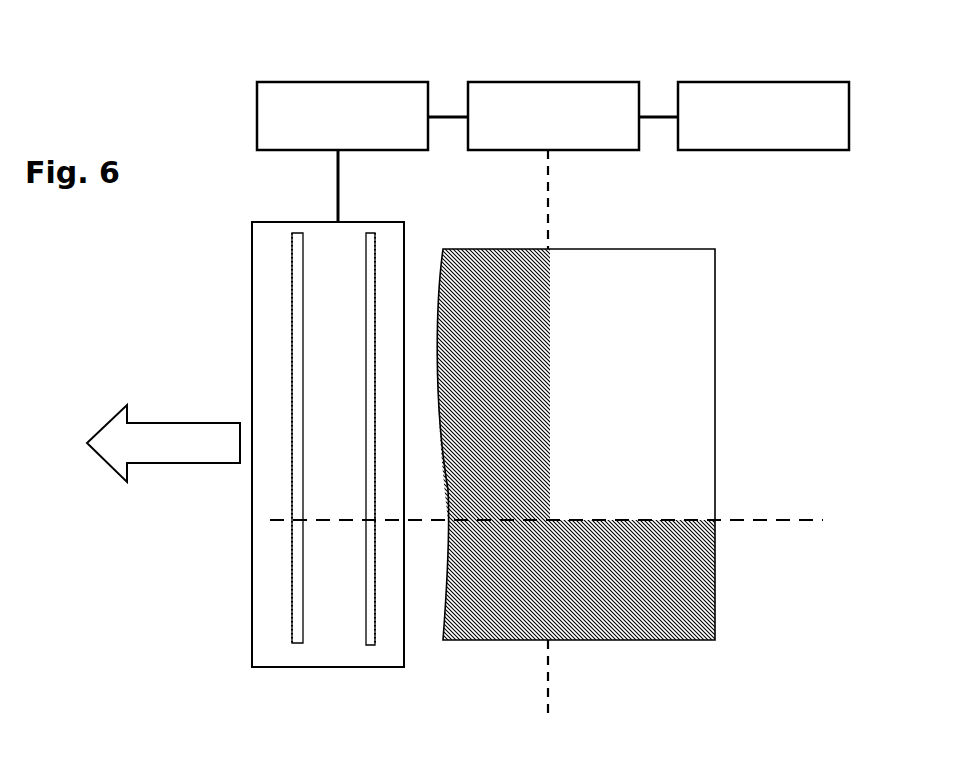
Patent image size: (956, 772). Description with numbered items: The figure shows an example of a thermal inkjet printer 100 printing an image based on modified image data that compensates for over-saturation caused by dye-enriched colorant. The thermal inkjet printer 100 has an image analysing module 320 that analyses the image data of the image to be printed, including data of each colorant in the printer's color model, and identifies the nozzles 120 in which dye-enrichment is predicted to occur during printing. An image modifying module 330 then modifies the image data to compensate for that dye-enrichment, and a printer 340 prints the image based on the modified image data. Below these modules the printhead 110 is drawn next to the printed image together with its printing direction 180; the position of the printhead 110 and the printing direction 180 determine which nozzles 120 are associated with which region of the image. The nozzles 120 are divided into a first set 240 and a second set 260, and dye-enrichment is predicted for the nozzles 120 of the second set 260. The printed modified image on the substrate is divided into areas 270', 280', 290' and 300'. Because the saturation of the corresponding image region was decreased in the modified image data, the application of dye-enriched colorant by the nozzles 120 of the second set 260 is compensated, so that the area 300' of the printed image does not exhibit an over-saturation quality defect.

The thermal inkjet printer 100 is at (168, 119).
The printhead 110 is at (272, 263).
The nozzles 120 is at (293, 313).
The printing direction 180 is at (168, 423).
The first set of nozzles 240 is at (366, 585).
The second set of nozzles 260 is at (366, 378).
The area of the image on the substrate 270' is at (629, 580).
The area of the image on the substrate 280' is at (626, 444).
The area of the image on the substrate 290' is at (515, 455).
The area of the image on the substrate 300' is at (493, 356).
The image analysing module 320 is at (758, 100).
The image modifying module 330 is at (550, 105).
The printer 340 is at (337, 88).